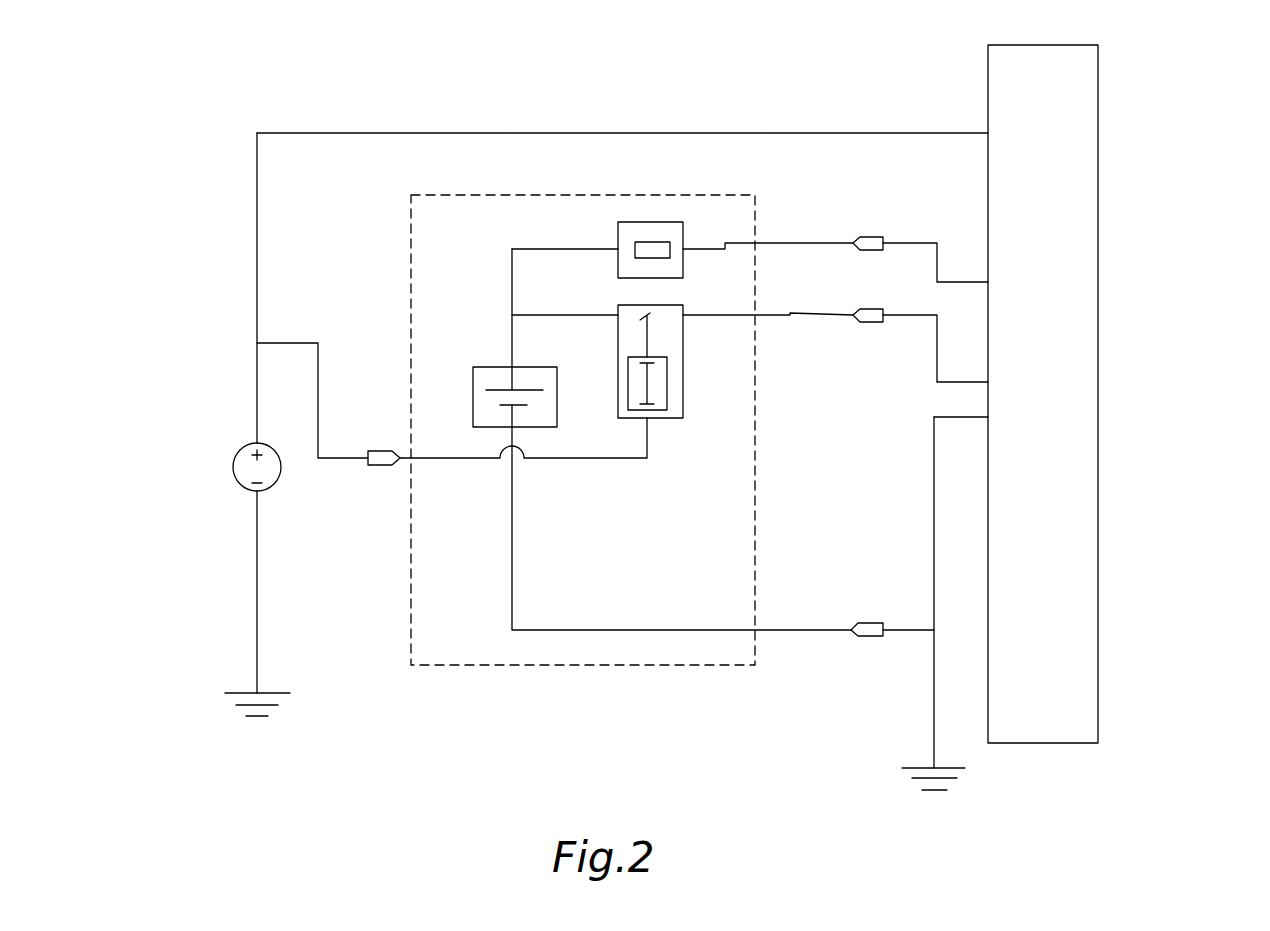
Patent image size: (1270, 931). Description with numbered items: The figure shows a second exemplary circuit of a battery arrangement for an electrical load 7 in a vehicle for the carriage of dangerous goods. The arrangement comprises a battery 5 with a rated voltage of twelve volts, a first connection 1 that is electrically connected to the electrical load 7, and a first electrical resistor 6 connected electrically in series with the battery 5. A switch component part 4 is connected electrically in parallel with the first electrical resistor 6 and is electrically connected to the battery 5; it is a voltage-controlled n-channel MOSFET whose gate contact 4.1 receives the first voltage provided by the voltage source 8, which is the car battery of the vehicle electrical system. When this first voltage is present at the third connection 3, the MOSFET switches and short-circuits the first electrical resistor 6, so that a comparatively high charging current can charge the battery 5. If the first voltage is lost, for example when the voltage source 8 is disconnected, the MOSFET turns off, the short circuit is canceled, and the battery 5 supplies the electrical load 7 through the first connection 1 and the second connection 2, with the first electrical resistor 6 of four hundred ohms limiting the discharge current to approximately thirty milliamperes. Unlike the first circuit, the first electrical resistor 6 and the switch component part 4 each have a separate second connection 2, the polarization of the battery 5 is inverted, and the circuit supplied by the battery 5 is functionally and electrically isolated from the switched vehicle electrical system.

The first connection 1 is at (860, 632).
The second connection 2 is at (862, 313).
The third connection 3 is at (390, 466).
The switch component part 4 is at (565, 538).
The gate contact 4.1 is at (643, 420).
The battery 5 is at (493, 422).
The first electrical resistor 6 is at (652, 222).
The electrical load 7 is at (1099, 446).
The voltage source 8 is at (243, 443).